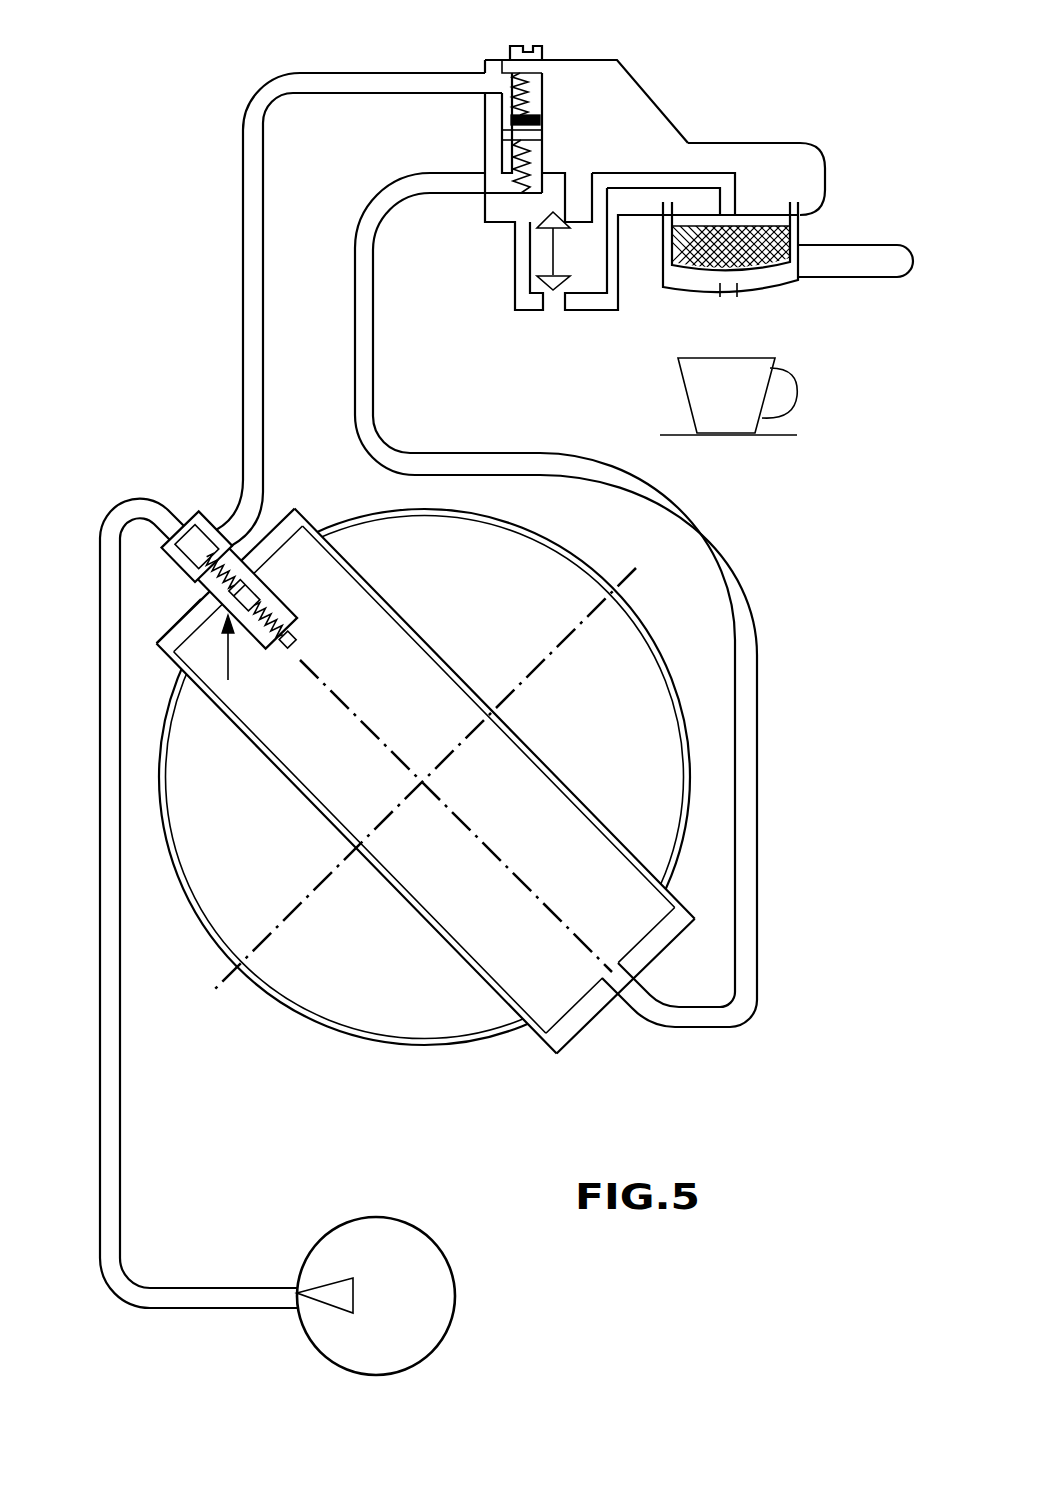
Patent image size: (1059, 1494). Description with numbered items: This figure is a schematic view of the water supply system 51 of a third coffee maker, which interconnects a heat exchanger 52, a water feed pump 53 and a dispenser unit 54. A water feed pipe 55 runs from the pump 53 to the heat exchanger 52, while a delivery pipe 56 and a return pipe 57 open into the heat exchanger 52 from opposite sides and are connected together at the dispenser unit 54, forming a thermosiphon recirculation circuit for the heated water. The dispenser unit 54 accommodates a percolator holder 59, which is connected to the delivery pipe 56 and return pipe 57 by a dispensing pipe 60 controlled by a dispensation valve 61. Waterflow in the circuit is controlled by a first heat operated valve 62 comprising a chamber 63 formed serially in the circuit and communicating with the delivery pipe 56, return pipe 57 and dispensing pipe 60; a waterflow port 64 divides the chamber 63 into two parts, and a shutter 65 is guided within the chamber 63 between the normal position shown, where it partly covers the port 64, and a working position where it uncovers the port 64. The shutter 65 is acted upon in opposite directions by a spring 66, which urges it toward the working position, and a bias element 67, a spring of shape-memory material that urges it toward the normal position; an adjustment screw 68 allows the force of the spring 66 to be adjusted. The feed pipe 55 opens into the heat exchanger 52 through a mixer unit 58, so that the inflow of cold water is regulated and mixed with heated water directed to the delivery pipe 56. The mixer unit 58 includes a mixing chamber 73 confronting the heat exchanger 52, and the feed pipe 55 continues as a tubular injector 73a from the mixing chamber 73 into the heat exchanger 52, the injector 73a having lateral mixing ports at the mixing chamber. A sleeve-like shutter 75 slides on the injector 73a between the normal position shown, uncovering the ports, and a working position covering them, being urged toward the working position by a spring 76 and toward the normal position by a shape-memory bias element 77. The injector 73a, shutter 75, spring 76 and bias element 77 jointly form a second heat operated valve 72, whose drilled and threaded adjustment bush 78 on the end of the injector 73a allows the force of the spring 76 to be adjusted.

The water supply system 51 is at (766, 498).
The heat exchanger 52 is at (450, 947).
The water feed pump 53 is at (395, 1242).
The dispenser unit 54 is at (805, 160).
The water feed pipe 55 is at (112, 930).
The delivery pipe 56 is at (250, 180).
The return pipe 57 is at (758, 706).
The mixer unit 58 is at (140, 565).
The percolator holder 59 is at (750, 253).
The dispensing pipe 60 is at (697, 172).
The dispensation valve 61 is at (553, 290).
The first heat operated valve 62 is at (462, 114).
The chamber 63 is at (502, 182).
The waterflow port 64 is at (505, 122).
The shutter 65 is at (618, 62).
The spring 66 is at (511, 87).
The bias element 67 is at (542, 125).
The adjustment screw 68 is at (542, 52).
The second heat operated valve 72 is at (225, 680).
The mixing chamber 73 is at (207, 530).
The tubular injector 73a is at (282, 613).
The sleeve-like shutter 75 is at (247, 588).
The spring 76 is at (283, 627).
The bias element 77 is at (197, 583).
The adjustment bush 78 is at (292, 630).